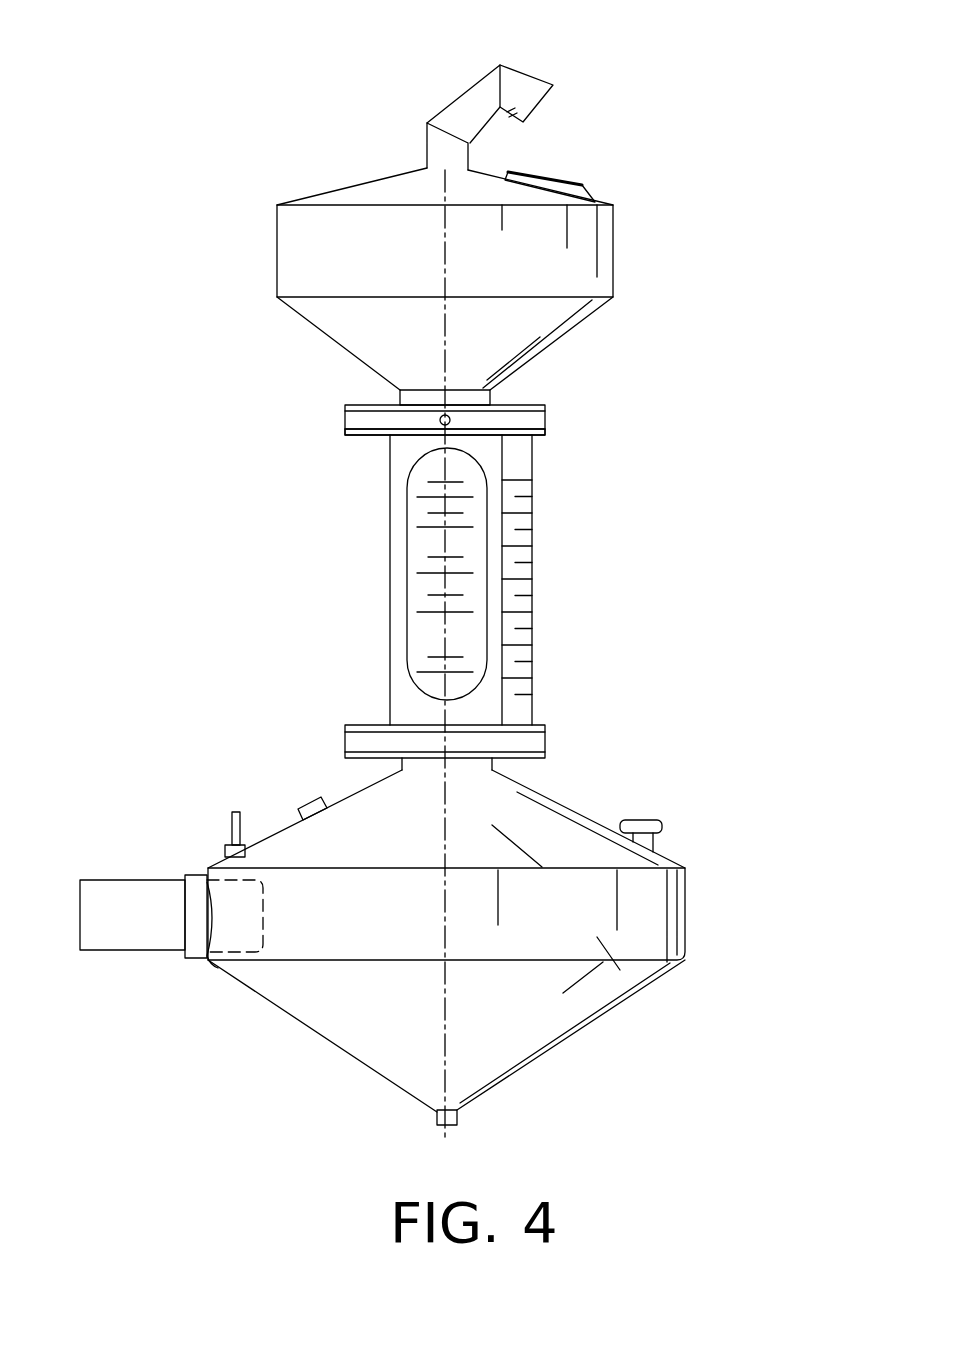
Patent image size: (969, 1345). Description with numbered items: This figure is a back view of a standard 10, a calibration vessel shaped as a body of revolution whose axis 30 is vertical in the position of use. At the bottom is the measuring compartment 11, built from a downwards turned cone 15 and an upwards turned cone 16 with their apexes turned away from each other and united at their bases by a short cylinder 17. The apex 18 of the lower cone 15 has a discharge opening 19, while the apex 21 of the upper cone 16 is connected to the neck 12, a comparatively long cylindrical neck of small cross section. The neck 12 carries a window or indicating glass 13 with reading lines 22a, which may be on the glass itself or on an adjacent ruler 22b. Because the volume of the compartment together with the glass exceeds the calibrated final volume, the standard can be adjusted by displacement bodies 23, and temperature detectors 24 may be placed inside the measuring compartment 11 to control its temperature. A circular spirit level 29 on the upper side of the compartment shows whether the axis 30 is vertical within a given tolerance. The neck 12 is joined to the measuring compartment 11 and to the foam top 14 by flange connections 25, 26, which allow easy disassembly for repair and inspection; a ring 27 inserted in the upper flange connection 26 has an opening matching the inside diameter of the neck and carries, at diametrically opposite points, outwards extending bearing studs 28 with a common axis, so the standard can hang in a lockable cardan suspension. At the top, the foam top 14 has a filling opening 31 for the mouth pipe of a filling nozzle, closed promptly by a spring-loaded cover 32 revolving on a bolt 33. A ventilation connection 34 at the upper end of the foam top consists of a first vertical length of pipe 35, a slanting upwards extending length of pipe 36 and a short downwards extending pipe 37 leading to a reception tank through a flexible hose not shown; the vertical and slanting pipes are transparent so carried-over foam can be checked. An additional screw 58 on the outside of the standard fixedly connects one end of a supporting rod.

The standard 10 is at (215, 315).
The measuring compartment 11 is at (498, 923).
The neck 12 is at (497, 585).
The indicating glass 13 is at (472, 547).
The foam top 14 is at (580, 265).
The downwards turned cone 15 is at (362, 1035).
The upwards turned cone 16 is at (573, 832).
The short cylinder 17 is at (678, 907).
The apex of the downwards turned cone 18 is at (560, 1045).
The discharge opening 19 is at (457, 1120).
The apex of the upwards turned cone 21 is at (548, 803).
The reading lines 22a is at (450, 527).
The ruler 22b is at (537, 543).
The displacement bodies 23 is at (122, 892).
The temperature detectors 24 is at (317, 798).
The flange connection 25 is at (500, 728).
The flange connection 26 is at (346, 435).
The ring 27 is at (345, 415).
The bearing stud 28 is at (443, 425).
The circular spirit level 29 is at (662, 832).
The axis 30 is at (445, 850).
The filling opening 31 is at (646, 178).
The cover 32 is at (582, 185).
The bolt 33 is at (512, 167).
The ventilation connection 34 is at (552, 95).
The first vertical length of pipe 35 is at (435, 150).
The slanting upwards extending length of pipe 36 is at (468, 97).
The short downwards extending pipe 37 is at (520, 80).
The additional screw 58 is at (238, 812).